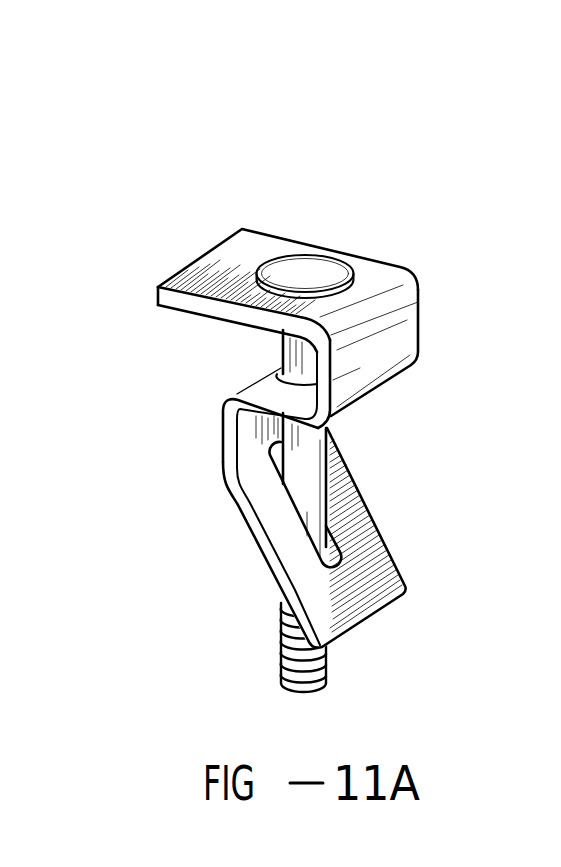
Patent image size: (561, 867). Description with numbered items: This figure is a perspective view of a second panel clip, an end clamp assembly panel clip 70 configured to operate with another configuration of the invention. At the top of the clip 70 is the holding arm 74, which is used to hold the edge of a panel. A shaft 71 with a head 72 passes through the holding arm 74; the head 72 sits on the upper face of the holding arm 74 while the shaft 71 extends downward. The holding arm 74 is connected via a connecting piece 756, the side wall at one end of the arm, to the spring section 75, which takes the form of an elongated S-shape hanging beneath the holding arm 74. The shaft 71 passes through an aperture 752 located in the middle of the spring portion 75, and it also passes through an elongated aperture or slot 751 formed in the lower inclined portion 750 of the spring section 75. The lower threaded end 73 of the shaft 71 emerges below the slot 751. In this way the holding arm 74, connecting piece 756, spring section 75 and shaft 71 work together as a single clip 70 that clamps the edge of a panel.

The end clamp assembly panel clip 70 is at (193, 144).
The shaft 71 is at (305, 475).
The head 72 is at (303, 268).
The threaded end of bolt 73 is at (280, 658).
The holding arm 74 is at (208, 262).
The spring section 75 is at (252, 445).
The inclined plate 750 is at (376, 608).
The elongated aperture or slot 751 is at (340, 557).
The aperture 752 is at (310, 381).
The connecting piece 756 is at (397, 340).